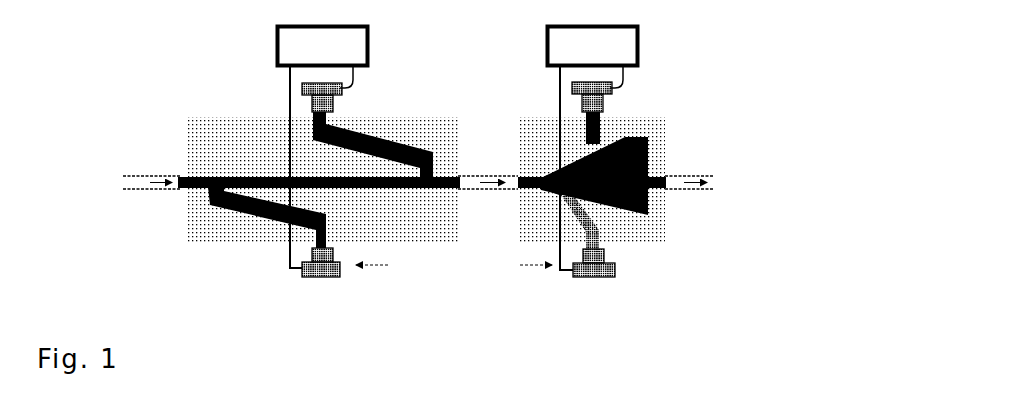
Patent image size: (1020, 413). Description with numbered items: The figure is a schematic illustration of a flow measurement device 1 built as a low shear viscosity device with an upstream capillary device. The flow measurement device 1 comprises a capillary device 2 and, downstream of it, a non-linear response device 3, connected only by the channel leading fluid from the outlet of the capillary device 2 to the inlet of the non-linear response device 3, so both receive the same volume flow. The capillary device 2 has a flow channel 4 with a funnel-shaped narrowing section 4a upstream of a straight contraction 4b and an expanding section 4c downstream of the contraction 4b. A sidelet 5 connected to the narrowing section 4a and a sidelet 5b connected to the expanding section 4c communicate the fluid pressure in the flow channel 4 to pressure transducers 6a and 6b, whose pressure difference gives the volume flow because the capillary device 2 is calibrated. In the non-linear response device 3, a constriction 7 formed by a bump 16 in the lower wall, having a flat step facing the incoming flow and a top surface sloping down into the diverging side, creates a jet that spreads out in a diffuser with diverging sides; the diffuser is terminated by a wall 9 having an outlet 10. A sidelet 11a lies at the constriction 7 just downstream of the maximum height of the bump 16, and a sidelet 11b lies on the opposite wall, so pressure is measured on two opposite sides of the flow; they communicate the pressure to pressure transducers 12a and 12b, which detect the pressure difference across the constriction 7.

The flow measurement device 1 is at (160, 86).
The capillary device 2 is at (320, 174).
The non-linear response device 3 is at (598, 173).
The flow channel 4 is at (272, 157).
The narrowing section 4a is at (239, 175).
The contraction 4b is at (345, 191).
The expanding section 4c is at (418, 191).
The sidelet 5 is at (266, 242).
The sidelet 5b is at (408, 147).
The pressure transducer 6a is at (338, 102).
The pressure transducer 6b is at (343, 268).
The constriction 7 is at (551, 176).
The wall 9 is at (650, 217).
The outlet 10 is at (665, 198).
The sidelet 11a is at (547, 198).
The sidelet 11b is at (632, 124).
The pressure transducer 12a is at (572, 270).
The pressure transducer 12b is at (603, 98).
The bump 16 is at (556, 178).